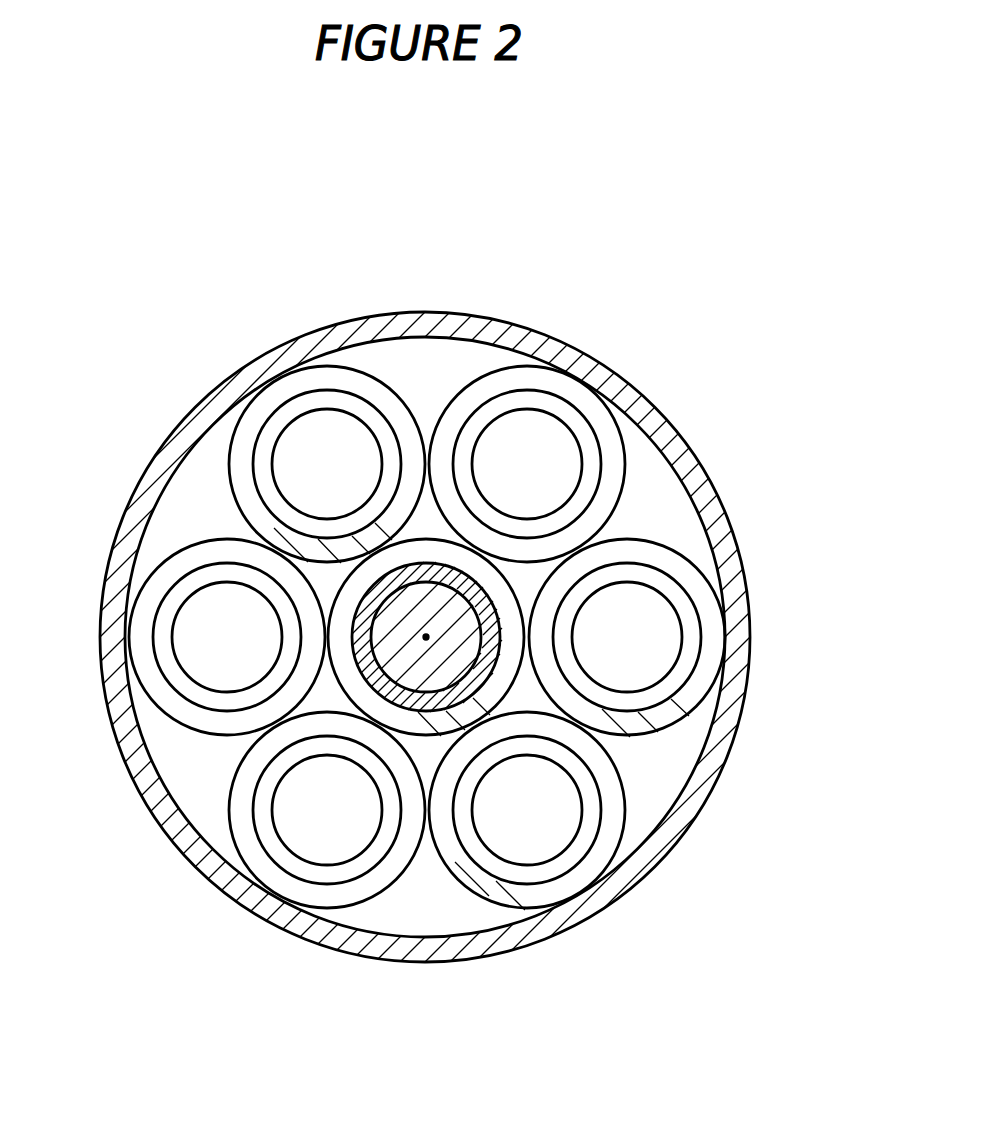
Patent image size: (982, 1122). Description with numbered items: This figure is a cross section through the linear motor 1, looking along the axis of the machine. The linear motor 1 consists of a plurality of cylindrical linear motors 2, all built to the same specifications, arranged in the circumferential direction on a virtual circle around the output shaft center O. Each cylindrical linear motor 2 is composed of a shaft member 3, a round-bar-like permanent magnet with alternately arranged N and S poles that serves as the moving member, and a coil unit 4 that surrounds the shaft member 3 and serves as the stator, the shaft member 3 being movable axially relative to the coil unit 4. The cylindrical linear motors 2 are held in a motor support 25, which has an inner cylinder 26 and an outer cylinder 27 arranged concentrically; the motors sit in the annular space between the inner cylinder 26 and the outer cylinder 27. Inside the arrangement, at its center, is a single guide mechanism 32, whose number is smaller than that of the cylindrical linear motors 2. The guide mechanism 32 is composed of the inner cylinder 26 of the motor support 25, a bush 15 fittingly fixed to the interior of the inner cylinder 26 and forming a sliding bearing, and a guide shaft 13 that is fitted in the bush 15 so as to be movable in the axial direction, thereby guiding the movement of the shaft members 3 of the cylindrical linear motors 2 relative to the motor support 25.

The linear motor 1 is at (434, 637).
The cylindrical linear motor 2 is at (434, 618).
The shaft member 3 is at (307, 430).
The coil unit 4 is at (267, 453).
The guide shaft 13 is at (459, 655).
The bush 15 is at (478, 645).
The motor support 25 is at (116, 466).
The inner cylinder 26 is at (340, 614).
The outer cylinder 27 is at (128, 508).
The guide mechanism 32 is at (513, 576).
The output shaft center O is at (426, 637).